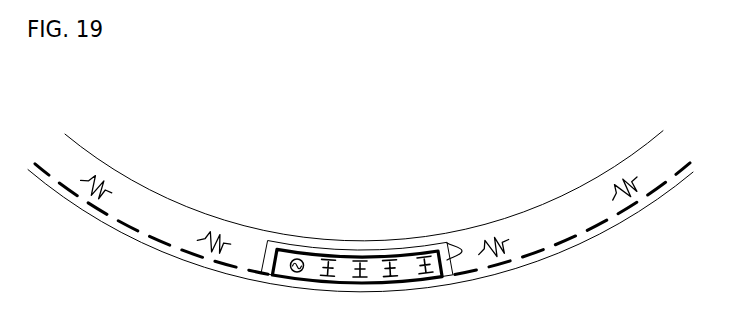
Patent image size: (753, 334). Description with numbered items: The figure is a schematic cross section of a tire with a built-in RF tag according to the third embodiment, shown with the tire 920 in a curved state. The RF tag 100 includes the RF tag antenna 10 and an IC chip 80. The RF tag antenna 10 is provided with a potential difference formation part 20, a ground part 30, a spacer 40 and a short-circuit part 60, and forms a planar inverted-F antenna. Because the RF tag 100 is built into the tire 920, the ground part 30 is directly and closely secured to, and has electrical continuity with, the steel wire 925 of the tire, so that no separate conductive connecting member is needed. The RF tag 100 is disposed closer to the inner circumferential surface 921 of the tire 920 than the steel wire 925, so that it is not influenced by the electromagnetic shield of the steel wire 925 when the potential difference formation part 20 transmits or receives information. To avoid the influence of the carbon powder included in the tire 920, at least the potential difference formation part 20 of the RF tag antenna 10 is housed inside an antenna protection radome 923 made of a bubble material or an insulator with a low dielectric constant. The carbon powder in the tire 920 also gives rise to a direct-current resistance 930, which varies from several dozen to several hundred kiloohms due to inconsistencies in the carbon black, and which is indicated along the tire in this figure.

The RF tag 100 is at (438, 132).
The RF tag antenna 10 is at (380, 200).
The potential difference formation part 20 is at (340, 257).
The ground part 30 is at (377, 282).
The spacer 40 is at (419, 228).
The short-circuit part 60 is at (265, 268).
The IC chip 80 is at (291, 261).
The tire 920 is at (168, 218).
The inner circumferential surface 921 is at (108, 163).
The antenna protection radome 923 is at (445, 268).
The steel wire 925 is at (500, 270).
The direct-current resistance 930 is at (507, 246).